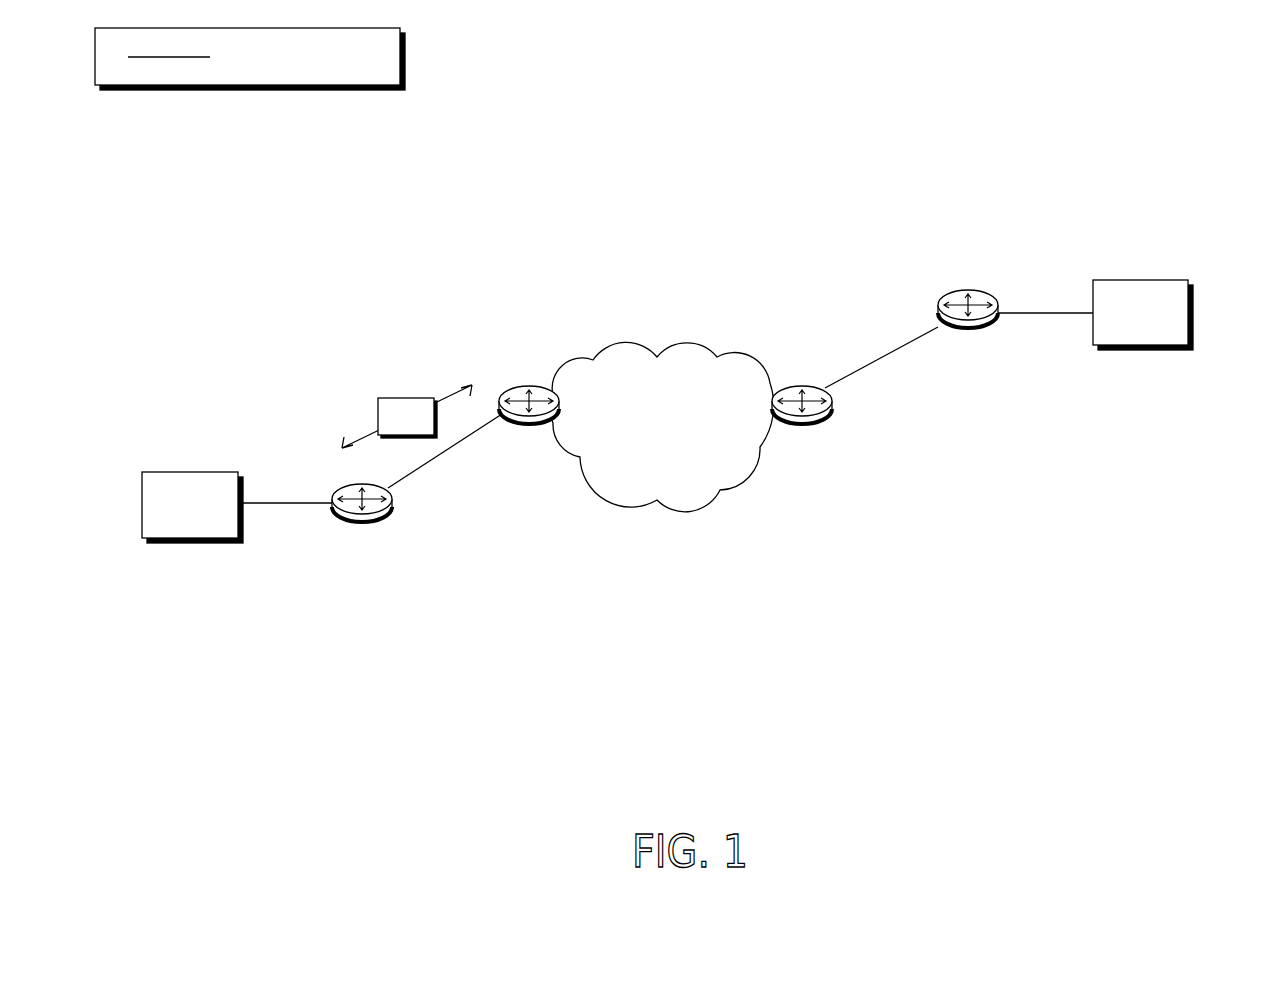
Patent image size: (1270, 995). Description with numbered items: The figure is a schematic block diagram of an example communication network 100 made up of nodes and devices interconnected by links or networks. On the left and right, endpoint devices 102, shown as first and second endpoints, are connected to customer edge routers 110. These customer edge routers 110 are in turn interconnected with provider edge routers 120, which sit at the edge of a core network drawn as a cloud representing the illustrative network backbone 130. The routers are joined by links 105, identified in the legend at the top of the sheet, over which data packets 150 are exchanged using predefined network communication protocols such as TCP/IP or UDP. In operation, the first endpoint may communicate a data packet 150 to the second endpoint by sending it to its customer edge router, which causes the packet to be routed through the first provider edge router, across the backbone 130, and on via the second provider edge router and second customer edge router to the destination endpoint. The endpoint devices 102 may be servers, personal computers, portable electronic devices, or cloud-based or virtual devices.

The communication network 100 is at (1192, 84).
The endpoint devices 102 is at (172, 529).
The links 105 is at (250, 59).
The customer edge routers 110 is at (665, 440).
The provider edge routers 120 is at (665, 439).
The network backbone 130 is at (647, 453).
The data packets 150 is at (423, 429).